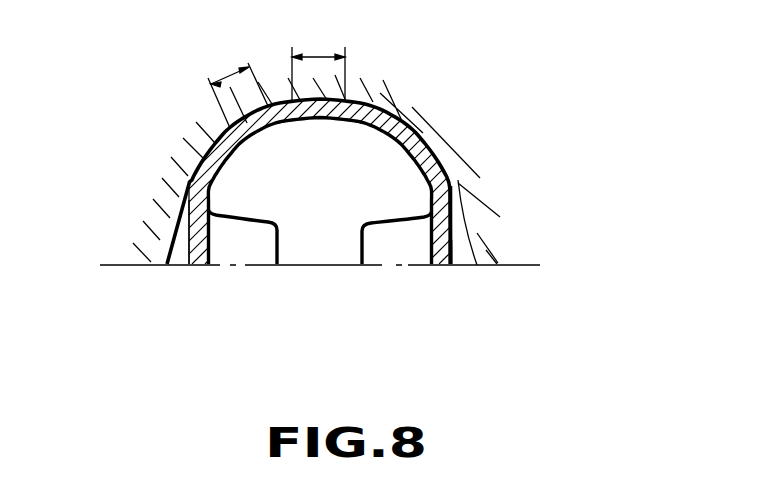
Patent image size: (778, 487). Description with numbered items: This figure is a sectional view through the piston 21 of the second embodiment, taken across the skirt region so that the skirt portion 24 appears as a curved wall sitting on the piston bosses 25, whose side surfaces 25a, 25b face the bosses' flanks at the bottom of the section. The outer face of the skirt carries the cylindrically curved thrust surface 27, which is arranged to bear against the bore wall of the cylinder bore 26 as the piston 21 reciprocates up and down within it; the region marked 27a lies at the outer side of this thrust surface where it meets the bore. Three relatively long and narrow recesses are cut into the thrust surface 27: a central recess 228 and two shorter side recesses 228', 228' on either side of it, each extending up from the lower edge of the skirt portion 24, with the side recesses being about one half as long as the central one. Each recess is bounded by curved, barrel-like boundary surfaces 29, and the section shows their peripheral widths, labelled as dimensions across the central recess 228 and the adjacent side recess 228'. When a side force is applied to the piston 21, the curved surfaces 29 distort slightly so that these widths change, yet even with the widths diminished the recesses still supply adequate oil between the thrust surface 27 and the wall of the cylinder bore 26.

The piston 21 is at (467, 228).
The skirt portion 24 is at (197, 212).
The piston boss 25 is at (253, 253).
The side surface of piston boss 25a is at (182, 247).
The side surface of piston boss 25b is at (452, 250).
The cylinder bore 26 is at (460, 164).
The thrust surface 27 is at (435, 131).
The flange portion of cap 27a is at (193, 175).
The curved barrel-like boundary surface 29 is at (220, 115).
The central recess 228 is at (351, 63).
The side recess 228' is at (299, 89).